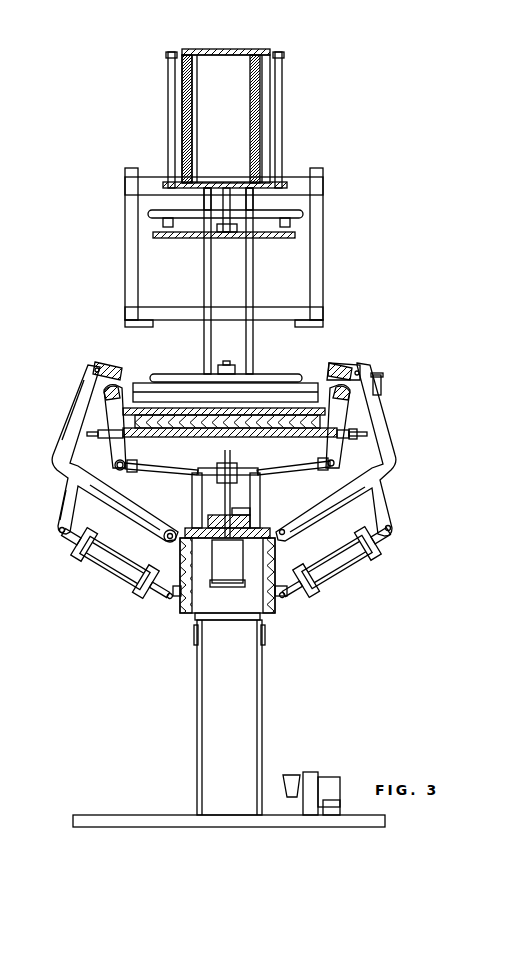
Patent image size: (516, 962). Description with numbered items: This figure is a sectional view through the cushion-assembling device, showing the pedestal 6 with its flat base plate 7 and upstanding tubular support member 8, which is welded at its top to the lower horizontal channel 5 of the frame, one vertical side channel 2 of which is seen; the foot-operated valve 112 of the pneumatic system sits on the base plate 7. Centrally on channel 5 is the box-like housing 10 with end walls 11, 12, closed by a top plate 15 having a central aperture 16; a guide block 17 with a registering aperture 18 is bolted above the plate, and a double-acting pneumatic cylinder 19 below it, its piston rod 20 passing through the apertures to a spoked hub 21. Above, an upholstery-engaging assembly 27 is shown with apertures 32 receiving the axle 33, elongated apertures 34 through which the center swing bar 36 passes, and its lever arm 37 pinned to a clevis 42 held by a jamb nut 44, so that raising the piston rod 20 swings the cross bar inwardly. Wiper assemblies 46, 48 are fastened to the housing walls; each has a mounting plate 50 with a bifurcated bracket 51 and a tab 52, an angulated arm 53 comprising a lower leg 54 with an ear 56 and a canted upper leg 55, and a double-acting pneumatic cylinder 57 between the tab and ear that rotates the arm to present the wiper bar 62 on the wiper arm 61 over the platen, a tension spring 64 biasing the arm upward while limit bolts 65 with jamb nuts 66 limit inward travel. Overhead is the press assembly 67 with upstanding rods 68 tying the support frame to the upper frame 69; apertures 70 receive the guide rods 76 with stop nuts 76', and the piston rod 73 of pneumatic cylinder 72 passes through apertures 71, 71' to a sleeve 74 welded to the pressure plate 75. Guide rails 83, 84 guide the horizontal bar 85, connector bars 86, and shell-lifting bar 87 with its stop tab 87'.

The vertical side channel 2 is at (253, 343).
The lower horizontal channel 5 is at (195, 637).
The pedestal 6 is at (148, 757).
The base plate 7 is at (168, 815).
The tubular support member 8 is at (262, 728).
The box-like housing 10 is at (103, 357).
The end wall 11 is at (183, 613).
The end wall 12 is at (271, 613).
The top plate 15 is at (272, 553).
The aperture 16 is at (192, 530).
The guide block 17 is at (250, 519).
The aperture 18 is at (245, 510).
The double-acting pneumatic cylinder 19 is at (230, 585).
The piston rod 20 is at (195, 493).
The hub 21 is at (240, 478).
The upholstery-engaging assembly 27 is at (98, 405).
The aperture 32 is at (110, 440).
The axle 33 is at (122, 442).
The elongated aperture 34 is at (315, 442).
The center swing bar 36 is at (350, 412).
The lever arm 37 is at (115, 466).
The clevis 42 is at (128, 468).
The jamb nut 44 is at (327, 504).
The wiper assembly 46 is at (50, 460).
The wiper assembly 48 is at (391, 482).
The mounting plate 50 is at (178, 603).
The bifurcated bracket 51 is at (166, 543).
The tab 52 is at (160, 597).
The angulated arm 53 is at (66, 490).
The lower leg 54 is at (118, 513).
The upper leg 55 is at (65, 430).
The ear 56 is at (75, 503).
The double-acting pneumatic cylinder 57 is at (113, 578).
The wiper arm 61 is at (112, 360).
The wiper bar 62 is at (123, 380).
The tension spring 64 is at (381, 392).
The limit bolt 65 is at (367, 432).
The jamb nut 66 is at (353, 439).
The press assembly 67 is at (290, 84).
The upstanding rod 68 is at (190, 103).
The upper frame 69 is at (208, 50).
The aperture 70 is at (165, 182).
The aperture 71 is at (213, 188).
The aperture 71' is at (258, 199).
The double-acting pneumatic cylinder 72 is at (242, 120).
The piston rod 73 is at (223, 217).
The sleeve 74 is at (237, 228).
The pressure plate 75 is at (268, 238).
The guide rod 76 is at (154, 120).
The stop nut 76' is at (294, 113).
The guide rail 83 is at (204, 280).
The guide rail 84 is at (253, 280).
The horizontal bar 85 is at (128, 190).
The connector bar 86 is at (323, 228).
The shell-lifting bar 87 is at (154, 331).
The stop tab 87' is at (323, 330).
The foot-operated valve 112 is at (327, 775).